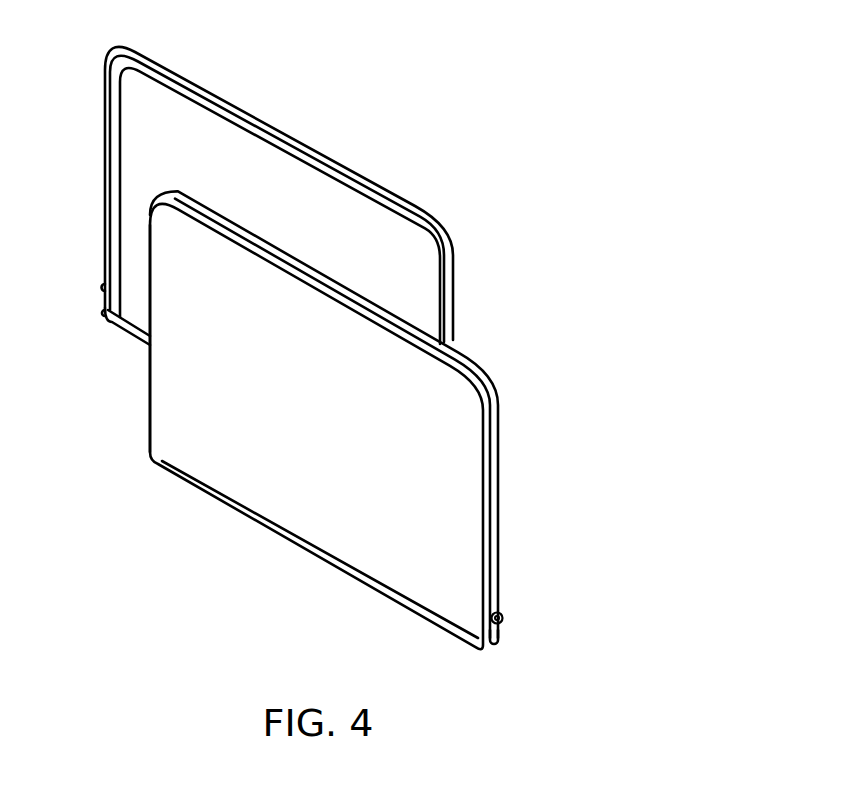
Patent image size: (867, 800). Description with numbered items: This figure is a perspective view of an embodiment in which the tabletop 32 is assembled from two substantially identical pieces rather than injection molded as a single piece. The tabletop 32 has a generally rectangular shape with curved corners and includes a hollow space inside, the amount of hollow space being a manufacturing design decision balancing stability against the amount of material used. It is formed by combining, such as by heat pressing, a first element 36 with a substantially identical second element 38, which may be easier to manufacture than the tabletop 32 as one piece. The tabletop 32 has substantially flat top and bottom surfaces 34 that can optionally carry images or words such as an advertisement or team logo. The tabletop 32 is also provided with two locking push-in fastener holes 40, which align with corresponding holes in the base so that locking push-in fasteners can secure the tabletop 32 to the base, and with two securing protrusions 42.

The tabletop 32 is at (507, 222).
The top and bottom surfaces 34 is at (318, 415).
The first element 36 is at (382, 186).
The second element 38 is at (150, 440).
The locking push-in fastener holes 40 is at (500, 641).
The securing protrusions 42 is at (500, 613).